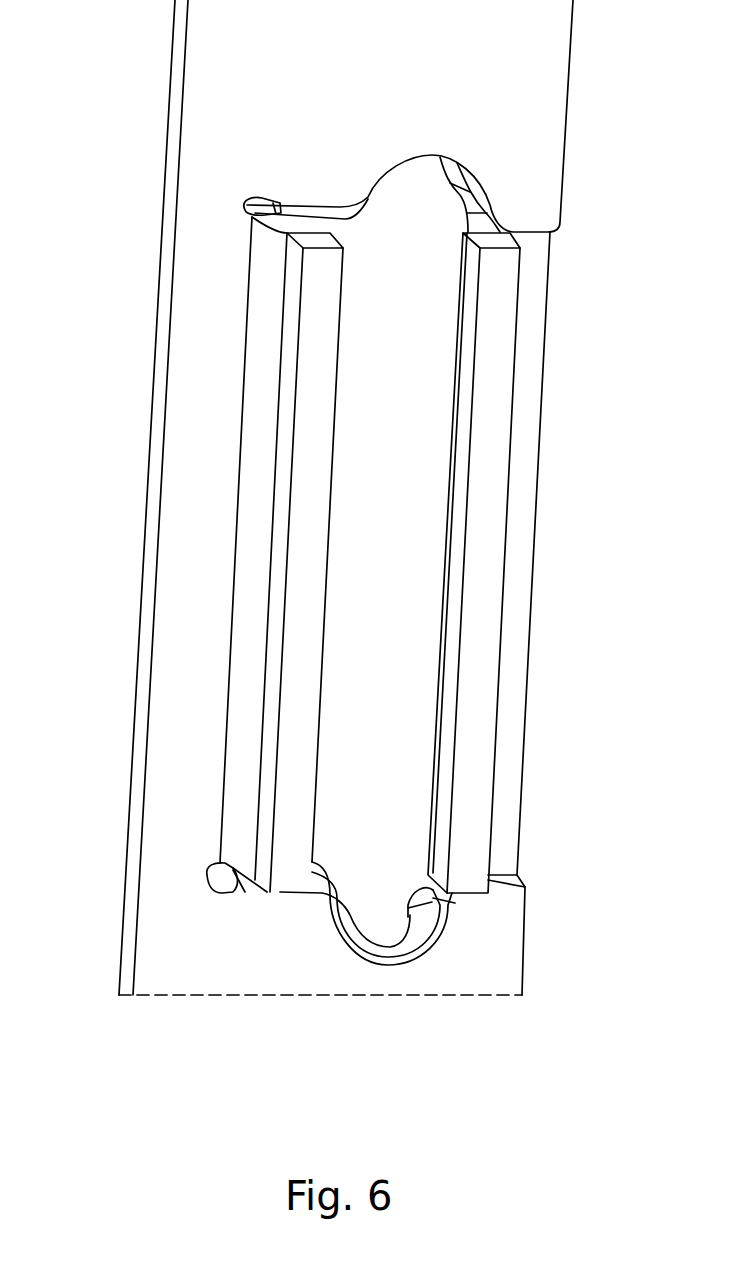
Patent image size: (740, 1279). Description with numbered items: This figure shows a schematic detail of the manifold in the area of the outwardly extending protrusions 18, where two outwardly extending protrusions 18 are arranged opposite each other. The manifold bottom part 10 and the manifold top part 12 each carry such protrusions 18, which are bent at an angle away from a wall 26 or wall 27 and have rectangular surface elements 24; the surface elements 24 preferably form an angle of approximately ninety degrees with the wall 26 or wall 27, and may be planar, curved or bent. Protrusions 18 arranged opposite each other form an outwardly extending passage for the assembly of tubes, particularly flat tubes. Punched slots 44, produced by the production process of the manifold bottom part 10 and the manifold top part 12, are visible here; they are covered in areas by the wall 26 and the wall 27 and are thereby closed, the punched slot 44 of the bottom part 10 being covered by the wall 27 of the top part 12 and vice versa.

The manifold bottom part 10 is at (543, 372).
The manifold top part 12 is at (226, 44).
The outwardly extending protrusion 18 is at (297, 857).
The rectangular surface element 24 is at (272, 642).
The wall 26 is at (397, 933).
The wall 27 is at (192, 963).
The punched slot 44 is at (245, 207).